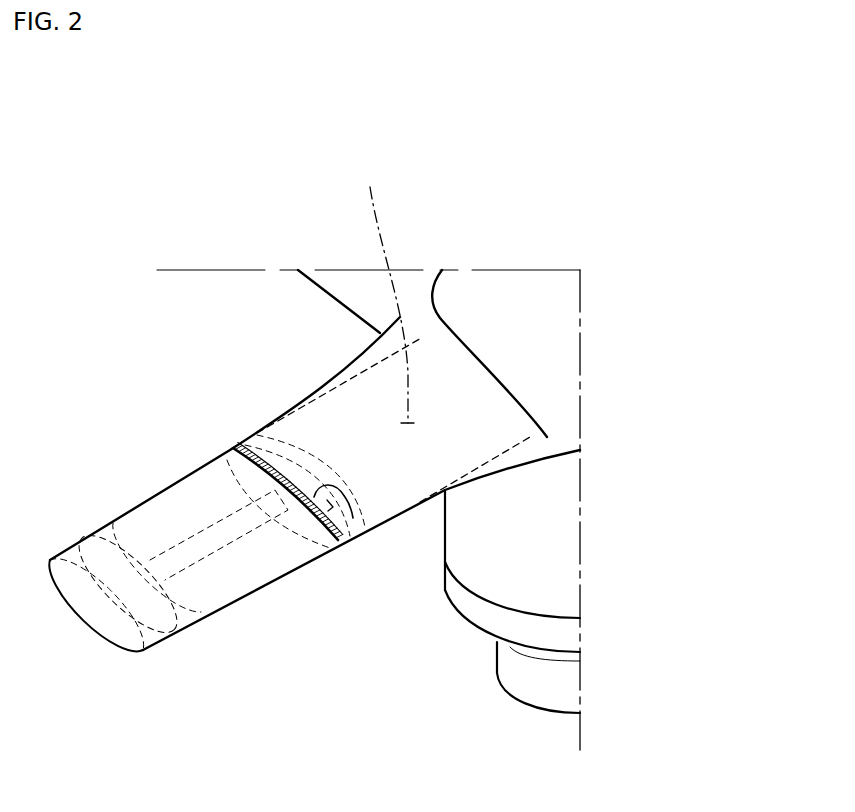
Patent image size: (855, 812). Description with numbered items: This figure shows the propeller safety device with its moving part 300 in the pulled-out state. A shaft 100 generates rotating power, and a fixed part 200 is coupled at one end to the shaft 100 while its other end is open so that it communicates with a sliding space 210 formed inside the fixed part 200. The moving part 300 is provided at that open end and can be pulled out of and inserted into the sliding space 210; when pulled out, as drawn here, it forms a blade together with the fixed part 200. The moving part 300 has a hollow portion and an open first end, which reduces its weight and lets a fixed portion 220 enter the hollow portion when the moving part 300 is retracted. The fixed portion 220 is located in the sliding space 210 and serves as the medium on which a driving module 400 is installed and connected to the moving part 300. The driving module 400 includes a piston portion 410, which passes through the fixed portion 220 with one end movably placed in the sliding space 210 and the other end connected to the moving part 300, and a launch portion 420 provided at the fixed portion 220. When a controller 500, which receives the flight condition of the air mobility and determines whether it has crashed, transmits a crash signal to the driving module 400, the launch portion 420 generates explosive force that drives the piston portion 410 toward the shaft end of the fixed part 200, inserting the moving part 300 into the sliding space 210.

The shaft 100 is at (553, 555).
The fixed part 200 is at (357, 353).
The sliding space 210 is at (382, 290).
The fixed portion 220 is at (240, 447).
The moving part 300 is at (150, 523).
The driving module 400 is at (266, 629).
The piston portion 410 is at (200, 547).
The launch portion 420 is at (353, 538).
The controller 500 is at (563, 687).